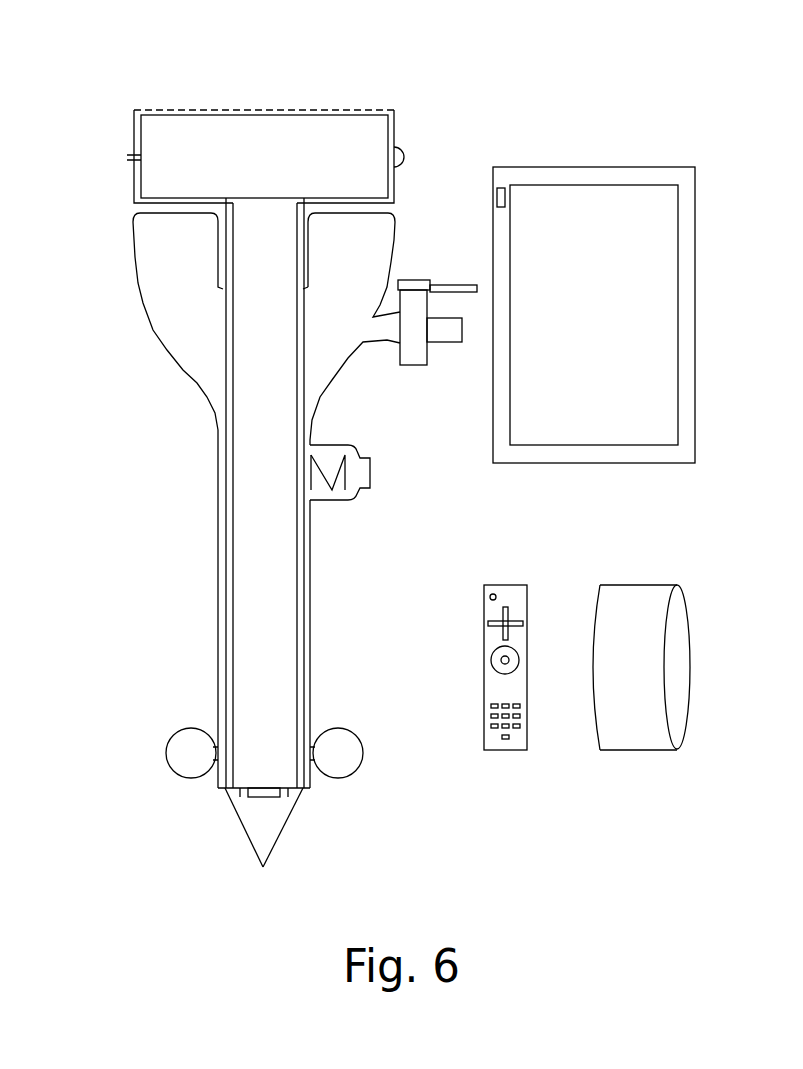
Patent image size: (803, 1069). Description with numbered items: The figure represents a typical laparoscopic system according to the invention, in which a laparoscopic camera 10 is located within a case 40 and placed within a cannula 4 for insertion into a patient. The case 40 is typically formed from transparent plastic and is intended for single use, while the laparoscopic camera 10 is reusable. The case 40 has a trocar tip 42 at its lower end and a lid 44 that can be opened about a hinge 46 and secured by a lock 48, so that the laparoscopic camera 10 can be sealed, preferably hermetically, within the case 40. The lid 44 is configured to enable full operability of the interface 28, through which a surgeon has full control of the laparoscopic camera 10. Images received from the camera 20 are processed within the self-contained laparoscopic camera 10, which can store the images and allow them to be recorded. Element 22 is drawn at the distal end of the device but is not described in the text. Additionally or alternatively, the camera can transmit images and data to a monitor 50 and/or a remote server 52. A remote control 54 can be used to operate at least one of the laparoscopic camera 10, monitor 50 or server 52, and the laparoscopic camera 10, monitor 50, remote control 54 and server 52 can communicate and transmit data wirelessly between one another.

The cannula 4 is at (310, 592).
The laparoscopic camera 10 is at (267, 165).
The camera 20 is at (264, 797).
The electrodes 22 is at (287, 792).
The interface 28 is at (253, 86).
The case 40 is at (135, 205).
The trocar tip 42 is at (263, 867).
The lid 44 is at (393, 109).
The hinge 46 is at (403, 163).
The lock 48 is at (127, 158).
The monitor 50 is at (609, 329).
The remote server 52 is at (647, 682).
The remote control 54 is at (505, 752).